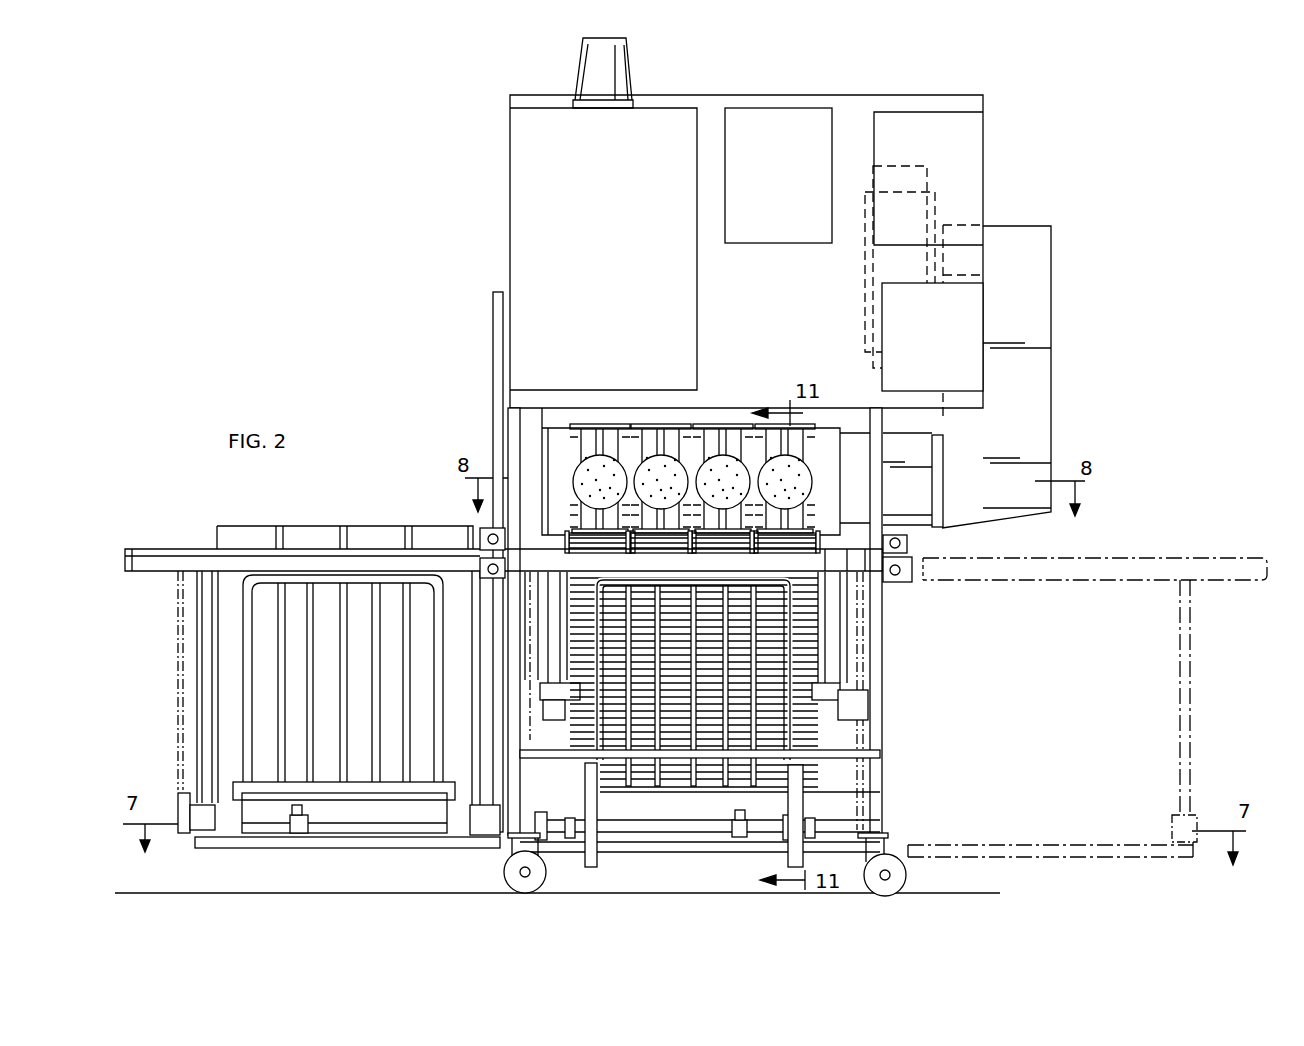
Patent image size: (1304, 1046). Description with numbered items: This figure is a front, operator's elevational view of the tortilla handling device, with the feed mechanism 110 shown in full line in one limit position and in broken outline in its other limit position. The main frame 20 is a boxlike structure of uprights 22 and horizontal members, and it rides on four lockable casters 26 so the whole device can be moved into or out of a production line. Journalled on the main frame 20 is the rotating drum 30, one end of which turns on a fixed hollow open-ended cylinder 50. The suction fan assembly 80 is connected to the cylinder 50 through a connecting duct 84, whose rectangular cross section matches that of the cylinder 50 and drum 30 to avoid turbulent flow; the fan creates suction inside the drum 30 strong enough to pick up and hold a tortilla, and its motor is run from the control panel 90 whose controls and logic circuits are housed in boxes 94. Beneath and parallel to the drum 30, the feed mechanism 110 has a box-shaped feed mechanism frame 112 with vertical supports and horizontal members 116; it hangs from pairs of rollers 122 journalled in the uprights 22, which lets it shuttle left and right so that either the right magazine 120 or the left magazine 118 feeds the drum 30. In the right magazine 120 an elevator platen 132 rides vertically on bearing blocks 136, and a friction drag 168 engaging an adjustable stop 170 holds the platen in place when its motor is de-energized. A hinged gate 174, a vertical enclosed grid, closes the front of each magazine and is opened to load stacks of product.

The main frame 20 is at (882, 714).
The uprights 22 is at (875, 633).
The casters 26 is at (506, 873).
The rotating drum 30 is at (548, 433).
The fixed hollow open-ended cylinder 50 is at (905, 440).
The suction fan assembly 80 is at (1053, 305).
The connecting duct 84 is at (968, 375).
The control panel 90 is at (853, 102).
The boxes 94 is at (520, 158).
The feed mechanism 110 is at (243, 526).
The feed mechanism frame 112 is at (143, 548).
The horizontal members 116 is at (303, 548).
The left magazine 118 is at (235, 693).
The right magazine 120 is at (930, 754).
The rollers 122 is at (478, 560).
The elevator platen 132 is at (805, 683).
The bearing blocks 136 is at (843, 710).
The friction drag 168 is at (310, 818).
The adjustable stop 170 is at (300, 828).
The gate 174 is at (248, 618).